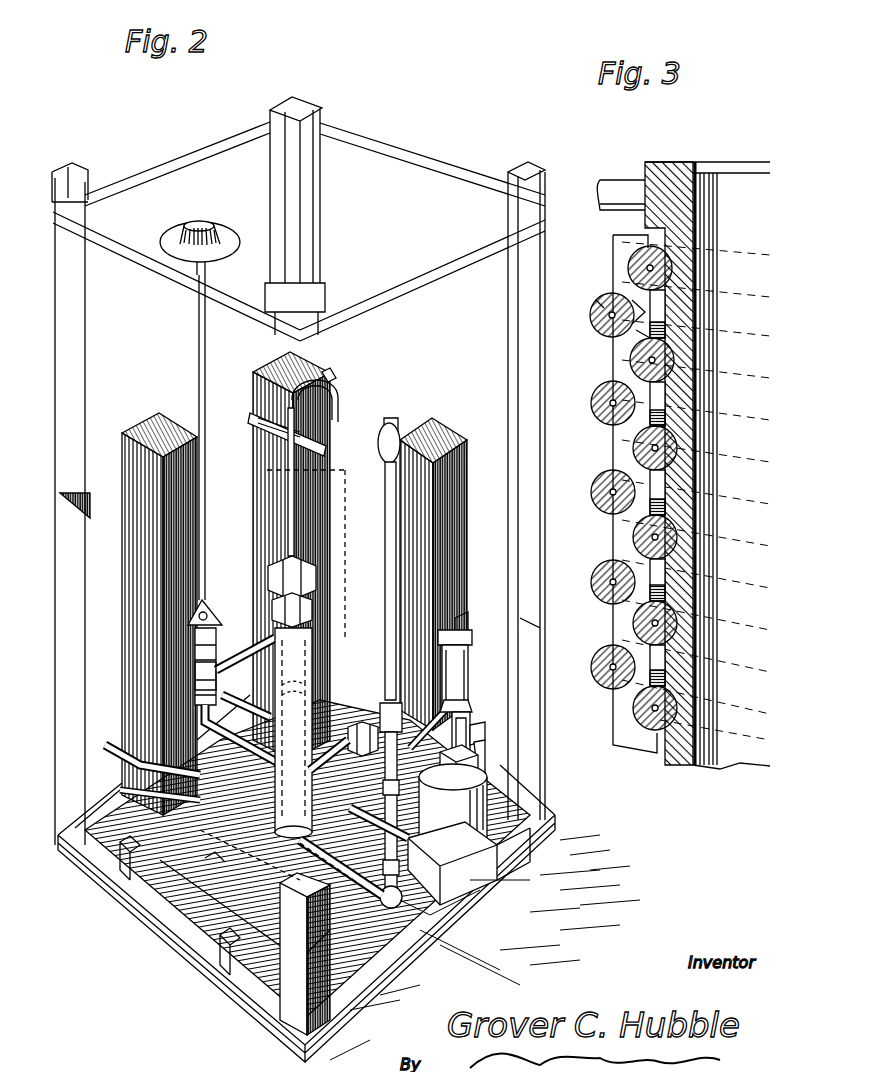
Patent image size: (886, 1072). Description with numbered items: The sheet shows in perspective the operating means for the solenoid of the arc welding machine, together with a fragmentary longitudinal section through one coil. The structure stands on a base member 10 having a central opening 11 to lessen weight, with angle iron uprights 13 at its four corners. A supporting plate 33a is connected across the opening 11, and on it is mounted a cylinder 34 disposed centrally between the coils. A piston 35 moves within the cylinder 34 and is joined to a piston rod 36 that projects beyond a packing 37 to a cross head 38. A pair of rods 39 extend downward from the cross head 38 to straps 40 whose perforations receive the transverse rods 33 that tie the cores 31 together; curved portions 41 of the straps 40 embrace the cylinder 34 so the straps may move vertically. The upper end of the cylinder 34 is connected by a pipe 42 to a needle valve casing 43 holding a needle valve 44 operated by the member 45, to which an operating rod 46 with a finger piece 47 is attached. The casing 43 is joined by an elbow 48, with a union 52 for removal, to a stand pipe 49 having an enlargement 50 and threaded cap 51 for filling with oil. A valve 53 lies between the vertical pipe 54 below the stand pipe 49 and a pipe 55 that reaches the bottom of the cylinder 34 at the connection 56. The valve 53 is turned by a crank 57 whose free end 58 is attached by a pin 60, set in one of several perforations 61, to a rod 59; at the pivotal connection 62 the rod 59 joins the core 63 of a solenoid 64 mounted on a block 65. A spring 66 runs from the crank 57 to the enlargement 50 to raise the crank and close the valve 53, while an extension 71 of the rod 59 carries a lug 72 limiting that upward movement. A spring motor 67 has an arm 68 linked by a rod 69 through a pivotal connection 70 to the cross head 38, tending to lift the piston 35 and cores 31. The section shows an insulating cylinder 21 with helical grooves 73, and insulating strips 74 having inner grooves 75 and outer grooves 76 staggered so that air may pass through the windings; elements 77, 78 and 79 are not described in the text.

In FIG. 2, the base member 10 is at (195, 908).
In FIG. 2, the central opening 11 is at (165, 880).
In FIG. 2, the angle iron uprights 13 is at (293, 1000).
In FIG. 3, the cylinder of insulating material 21 is at (727, 190).
In FIG. 2, the core 31 is at (130, 567).
In FIG. 2, the rods 33 is at (384, 860).
In FIG. 2, the supporting plate 33a is at (300, 850).
In FIG. 2, the cylinder 34 is at (330, 846).
In FIG. 2, the piston 35 is at (314, 662).
In FIG. 2, the piston rod 36 is at (287, 500).
In FIG. 2, the packing 37 is at (312, 582).
In FIG. 2, the cross head 38 is at (332, 418).
In FIG. 2, the rods 39 is at (262, 466).
In FIG. 2, the straps 40 is at (140, 772).
In FIG. 2, the curved portions 41 is at (275, 835).
In FIG. 2, the pipe 42 is at (254, 652).
In FIG. 2, the needle valve casing 43 is at (196, 690).
In FIG. 2, the needle valve 44 is at (196, 668).
In FIG. 2, the member 45 is at (222, 600).
In FIG. 2, the operating rod 46 is at (199, 370).
In FIG. 2, the finger piece 47 is at (198, 262).
In FIG. 2, the elbow 48 is at (130, 800).
In FIG. 2, the stand pipe 49 is at (386, 682).
In FIG. 2, the enlargement 50 is at (401, 432).
In FIG. 2, the threaded cap 51 is at (393, 418).
In FIG. 2, the union 52 is at (370, 724).
In FIG. 2, the valve 53 is at (455, 703).
In FIG. 2, the vertical pipe 54 is at (465, 862).
In FIG. 2, the pipe 55 is at (442, 906).
In FIG. 2, the connection to cylinder bottom 56 is at (235, 940).
In FIG. 2, the crank 57 is at (452, 792).
In FIG. 2, the outer free end of crank 58 is at (467, 727).
In FIG. 2, the rod 59 is at (486, 740).
In FIG. 2, the pin 60 is at (470, 714).
In FIG. 2, the perforations 61 is at (486, 756).
In FIG. 2, the pivotal connection 62 is at (479, 770).
In FIG. 2, the core 63 is at (472, 790).
In FIG. 2, the solenoid 64 is at (470, 825).
In FIG. 2, the block 65 is at (498, 856).
In FIG. 2, the spring 66 is at (397, 605).
In FIG. 2, the spring motor 67 is at (200, 745).
In FIG. 2, the arm 68 is at (212, 858).
In FIG. 2, the rod 69 is at (338, 620).
In FIG. 2, the pivotal connection 70 is at (325, 372).
In FIG. 2, the extension 71 is at (466, 660).
In FIG. 2, the lug 72 is at (458, 625).
In FIG. 3, the grooves 73 is at (694, 228).
In FIG. 3, the insulating strips 74 is at (620, 262).
In FIG. 3, the grooves 75 is at (626, 273).
In FIG. 3, the grooves 76 is at (640, 312).
In FIG. 3, the roller side plate 77 is at (600, 328).
In FIG. 3, the chain link 78 is at (634, 330).
In FIG. 3, the chain links 79 is at (672, 262).